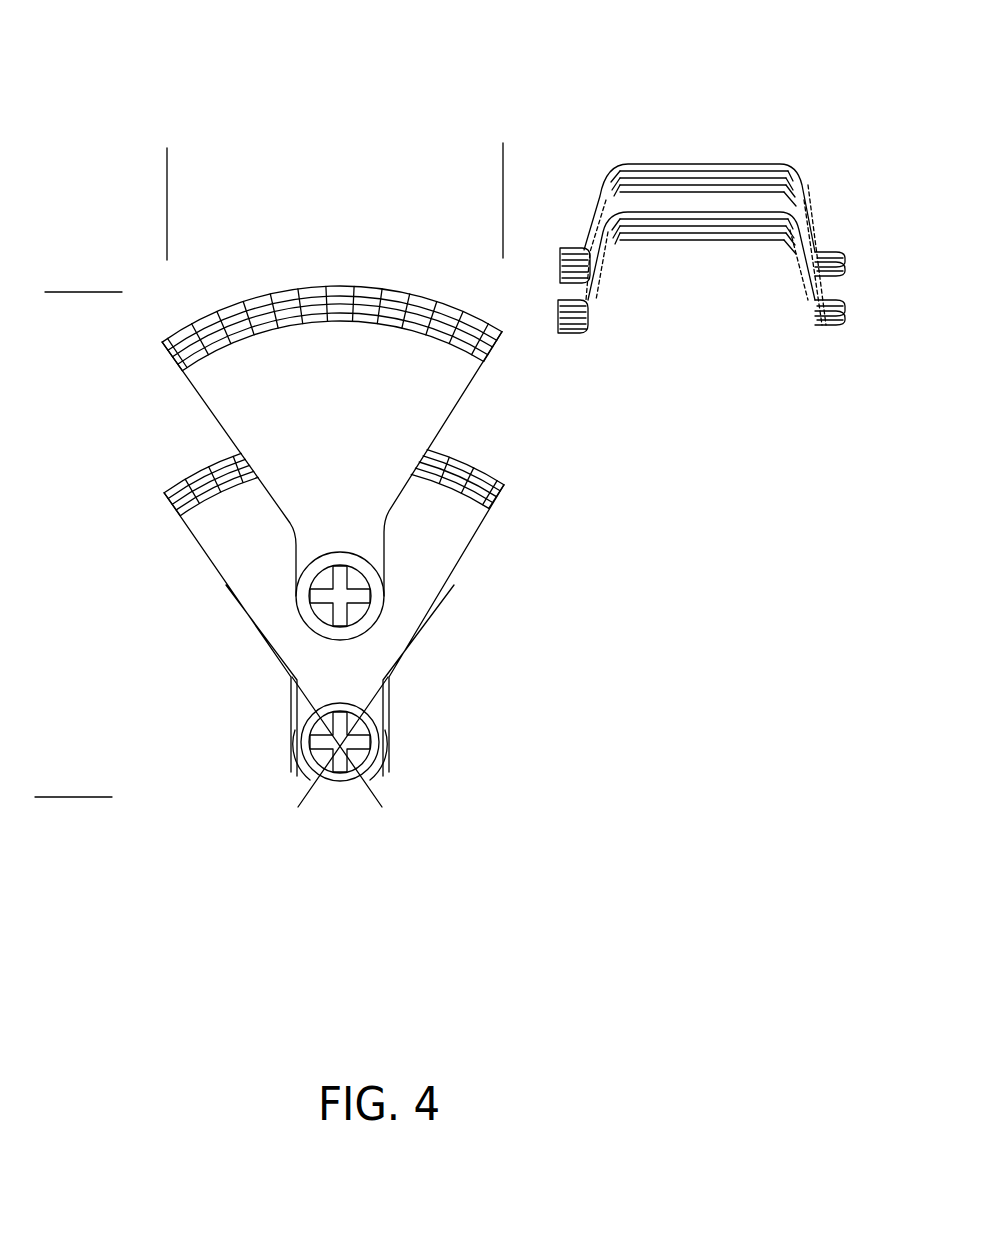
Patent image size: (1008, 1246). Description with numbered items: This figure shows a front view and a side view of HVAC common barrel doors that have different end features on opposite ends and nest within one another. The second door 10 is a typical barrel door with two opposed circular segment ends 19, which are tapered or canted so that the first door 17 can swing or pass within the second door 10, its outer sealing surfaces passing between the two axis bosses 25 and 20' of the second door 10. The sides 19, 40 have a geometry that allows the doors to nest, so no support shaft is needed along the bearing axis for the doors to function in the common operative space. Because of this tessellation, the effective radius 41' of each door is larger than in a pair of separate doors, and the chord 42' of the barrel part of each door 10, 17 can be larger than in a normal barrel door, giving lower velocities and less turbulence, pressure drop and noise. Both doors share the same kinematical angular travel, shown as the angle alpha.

The second door 10 is at (707, 163).
The circular segment ends 19 is at (396, 387).
The first door 17 is at (706, 257).
The axis boss 25 is at (576, 247).
The axis boss 20' is at (866, 253).
The side 40 is at (423, 540).
The chord 42' is at (335, 196).
The effective radius 41' is at (68, 544).